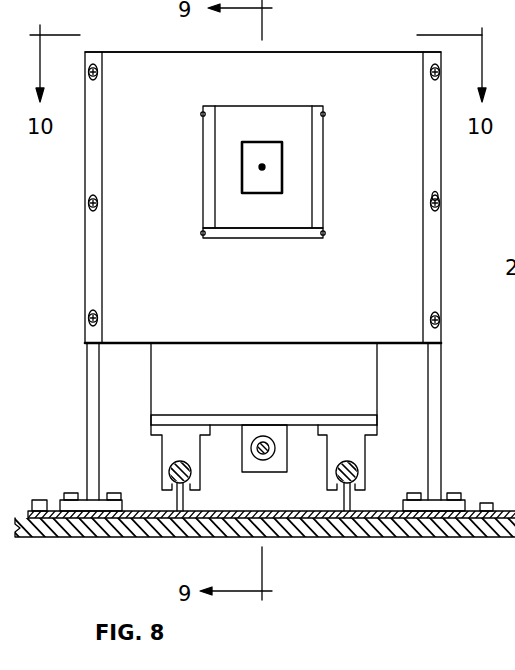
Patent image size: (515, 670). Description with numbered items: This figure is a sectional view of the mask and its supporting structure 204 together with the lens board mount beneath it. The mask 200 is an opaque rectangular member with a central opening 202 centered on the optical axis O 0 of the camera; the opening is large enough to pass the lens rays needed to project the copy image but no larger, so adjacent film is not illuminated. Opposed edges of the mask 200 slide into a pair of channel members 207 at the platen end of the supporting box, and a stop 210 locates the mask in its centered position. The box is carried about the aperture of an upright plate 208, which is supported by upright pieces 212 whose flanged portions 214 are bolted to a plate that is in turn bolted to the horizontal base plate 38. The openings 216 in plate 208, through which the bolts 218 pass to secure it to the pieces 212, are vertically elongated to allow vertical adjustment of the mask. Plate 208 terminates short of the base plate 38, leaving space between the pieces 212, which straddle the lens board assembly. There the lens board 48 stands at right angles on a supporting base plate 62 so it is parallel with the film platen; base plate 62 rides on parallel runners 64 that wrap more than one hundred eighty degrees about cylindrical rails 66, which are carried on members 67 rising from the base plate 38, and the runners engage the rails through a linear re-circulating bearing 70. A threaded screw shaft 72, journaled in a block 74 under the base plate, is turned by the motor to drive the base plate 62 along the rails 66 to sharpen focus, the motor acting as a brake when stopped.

The supporting structure 204 is at (312, 52).
The mask 200 is at (279, 110).
The channel members 207 is at (205, 157).
The central opening 202 is at (243, 178).
The optical axis 0 is at (264, 166).
The stop 210 is at (282, 236).
The upright plate 208 is at (290, 309).
The upright pieces 212 is at (90, 385).
The openings 216 is at (440, 196).
The bolts 218 is at (442, 206).
The lens board 48 is at (378, 398).
The supporting base plate 62 is at (251, 413).
The block 74 is at (283, 425).
The threaded screw shaft 72 is at (276, 450).
The runners 64 is at (160, 446).
The linear re-circulating bearing 70 is at (168, 463).
The rails 66 is at (168, 474).
The support rods 67 is at (344, 508).
The flanged portions 214 is at (92, 496).
The horizontal base plate 38 is at (431, 536).